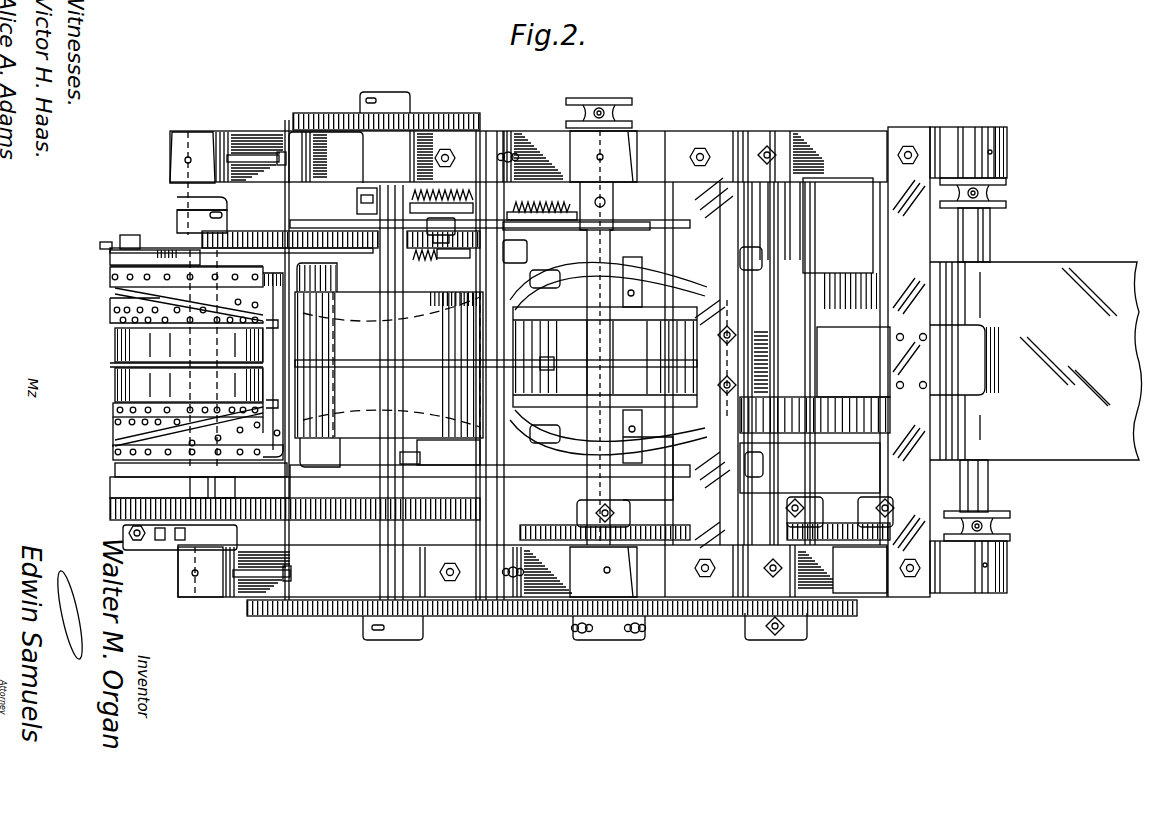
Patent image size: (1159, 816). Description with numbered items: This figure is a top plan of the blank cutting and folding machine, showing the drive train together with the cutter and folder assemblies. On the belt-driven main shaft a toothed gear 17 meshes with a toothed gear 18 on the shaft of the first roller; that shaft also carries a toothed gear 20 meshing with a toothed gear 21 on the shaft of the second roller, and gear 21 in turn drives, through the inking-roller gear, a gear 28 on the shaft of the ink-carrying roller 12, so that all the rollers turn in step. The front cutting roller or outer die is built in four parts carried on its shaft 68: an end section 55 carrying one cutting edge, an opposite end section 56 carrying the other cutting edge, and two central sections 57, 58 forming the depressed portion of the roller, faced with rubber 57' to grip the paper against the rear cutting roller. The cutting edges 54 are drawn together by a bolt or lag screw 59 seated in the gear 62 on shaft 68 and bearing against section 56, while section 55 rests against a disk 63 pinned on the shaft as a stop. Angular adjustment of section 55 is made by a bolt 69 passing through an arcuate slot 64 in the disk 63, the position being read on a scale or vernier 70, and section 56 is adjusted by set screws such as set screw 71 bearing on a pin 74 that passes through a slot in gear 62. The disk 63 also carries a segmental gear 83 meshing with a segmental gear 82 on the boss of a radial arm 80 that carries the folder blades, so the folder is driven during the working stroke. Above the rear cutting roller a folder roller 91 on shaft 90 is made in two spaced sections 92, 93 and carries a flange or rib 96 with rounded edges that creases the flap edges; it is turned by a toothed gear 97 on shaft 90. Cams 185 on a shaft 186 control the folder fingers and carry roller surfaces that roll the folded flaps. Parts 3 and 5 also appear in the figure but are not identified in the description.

The ink-carrying roller 12 is at (203, 600).
The shaft of the front cutting roller 68 is at (183, 197).
The disk 63 is at (177, 204).
The arcuate slot 64 is at (187, 257).
The scale or vernier 70 is at (157, 257).
The bolt 69 is at (123, 234).
The cutter section 55 is at (110, 268).
The cutting edges 54 is at (110, 286).
The rubber facing 57' is at (147, 302).
The central section 57 is at (147, 332).
The shaft 3 is at (68, 365).
The central section 58 is at (110, 386).
The cutter section 56 is at (110, 460).
The pin 74 is at (110, 478).
The bolt or lag screw 59 is at (110, 491).
The gear 62 is at (110, 508).
The set screw 71 is at (123, 531).
The segmental gear 83 is at (253, 233).
The segmental gear 82 is at (350, 204).
The flange or rib 96 is at (320, 262).
The radial arms 80 is at (389, 365).
The folder roller section 92 is at (391, 324).
The folder roller section 93 is at (391, 399).
The toothed gear 97 is at (428, 118).
The shaft 90 is at (410, 233).
The post 5 is at (603, 361).
The cam 185 is at (762, 258).
The shaft 186 is at (753, 478).
The toothed gear 21 is at (822, 523).
The gear 28 is at (873, 543).
The toothed gear 20 is at (537, 530).
The folder roller 91 is at (435, 455).
The toothed gear 17 is at (337, 608).
The toothed gear 18 is at (580, 602).